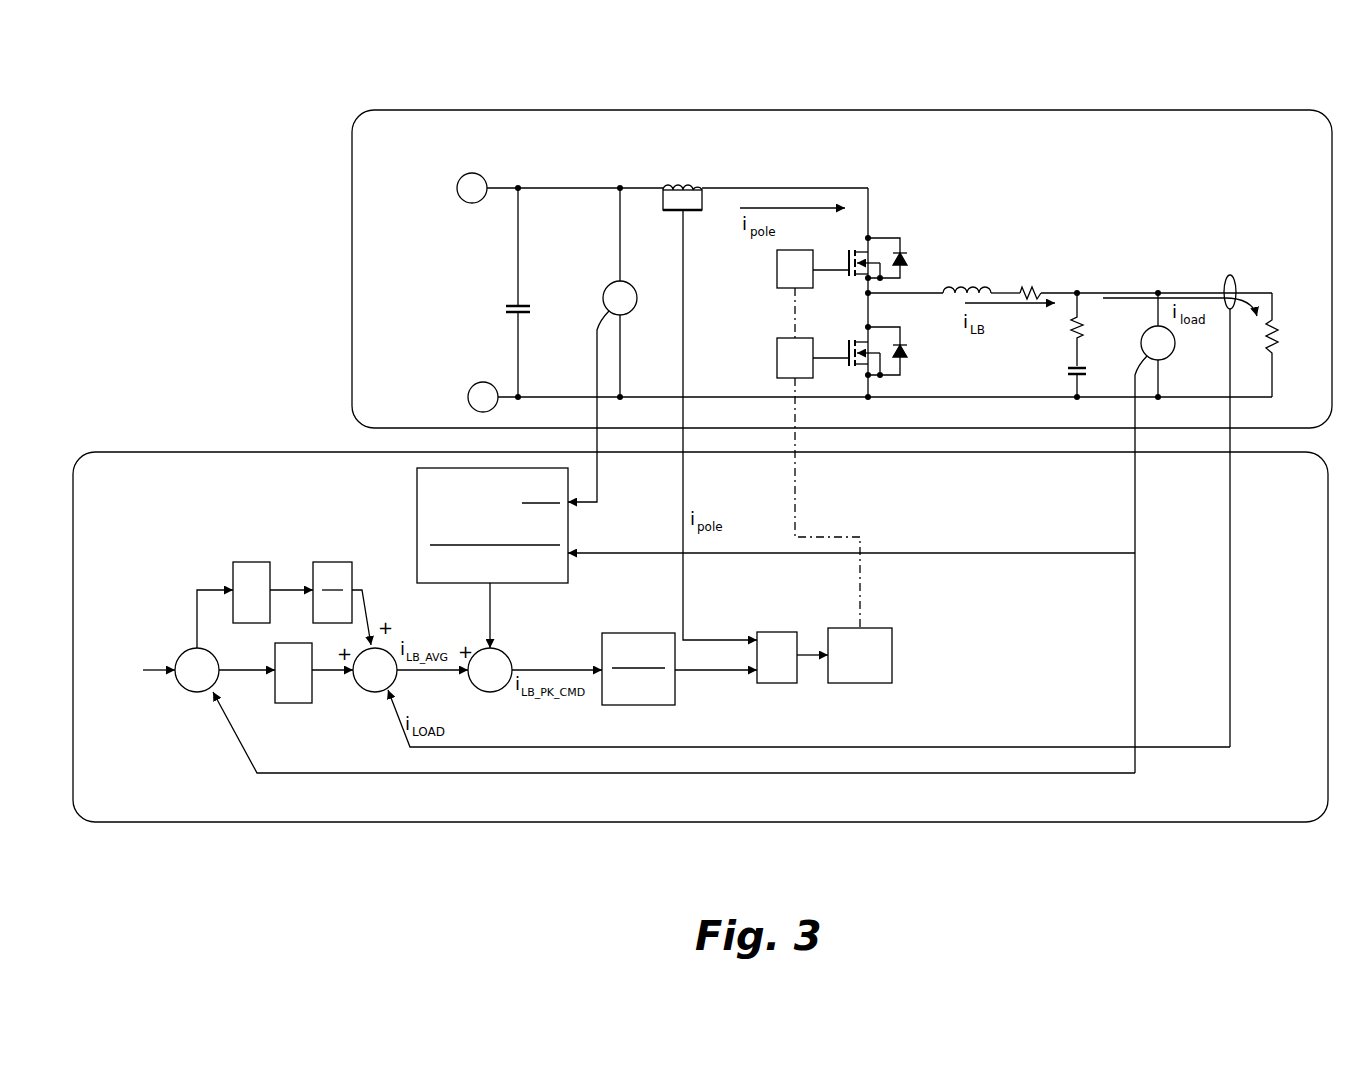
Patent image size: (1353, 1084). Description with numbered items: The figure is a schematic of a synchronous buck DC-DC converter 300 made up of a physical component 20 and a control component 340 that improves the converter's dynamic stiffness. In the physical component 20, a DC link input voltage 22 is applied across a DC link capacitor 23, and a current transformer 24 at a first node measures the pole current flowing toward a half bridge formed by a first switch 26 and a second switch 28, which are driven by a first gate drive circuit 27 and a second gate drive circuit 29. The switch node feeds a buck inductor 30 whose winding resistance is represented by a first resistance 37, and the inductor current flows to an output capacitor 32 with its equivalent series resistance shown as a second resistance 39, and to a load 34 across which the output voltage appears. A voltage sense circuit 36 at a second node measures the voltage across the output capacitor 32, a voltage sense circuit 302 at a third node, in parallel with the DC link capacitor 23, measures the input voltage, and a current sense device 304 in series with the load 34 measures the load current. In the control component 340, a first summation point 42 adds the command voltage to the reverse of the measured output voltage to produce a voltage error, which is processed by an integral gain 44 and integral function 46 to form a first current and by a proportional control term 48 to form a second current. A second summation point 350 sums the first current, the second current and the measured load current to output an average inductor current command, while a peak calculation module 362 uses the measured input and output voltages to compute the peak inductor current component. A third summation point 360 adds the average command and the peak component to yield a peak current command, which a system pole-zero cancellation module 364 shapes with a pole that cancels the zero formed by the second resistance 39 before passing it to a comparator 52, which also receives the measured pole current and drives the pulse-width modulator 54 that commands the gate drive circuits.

The physical component 20 is at (1289, 100).
The DC link input voltage 22 is at (391, 291).
The DC link capacitor 23 is at (525, 308).
The current transformer 24 is at (697, 183).
The first switch 26 is at (902, 252).
The first gate drive circuit 27 is at (777, 265).
The second switch 28 is at (901, 365).
The second gate drive circuit 29 is at (777, 355).
The buck inductor 30 is at (948, 290).
The output capacitor 32 is at (1085, 375).
The load 34 is at (1270, 366).
The voltage sense circuit 36 is at (1168, 357).
The first resistance 37 is at (1039, 290).
The second resistance 39 is at (1082, 330).
The first summation point 42 is at (178, 688).
The integral gain 44 is at (233, 578).
The integral function 46 is at (352, 582).
The proportional control term 48 is at (275, 695).
The comparator 52 is at (785, 684).
The PWM 54 is at (873, 684).
The converter 300 is at (263, 122).
The voltage sense circuit 302 is at (628, 314).
The current sense device 304 is at (1228, 278).
The control component 340 is at (1256, 843).
The second summation point 350 is at (358, 690).
The third summation point 360 is at (500, 692).
The peak calculation module 362 is at (417, 503).
The system pole-zero cancellation module 364 is at (648, 633).